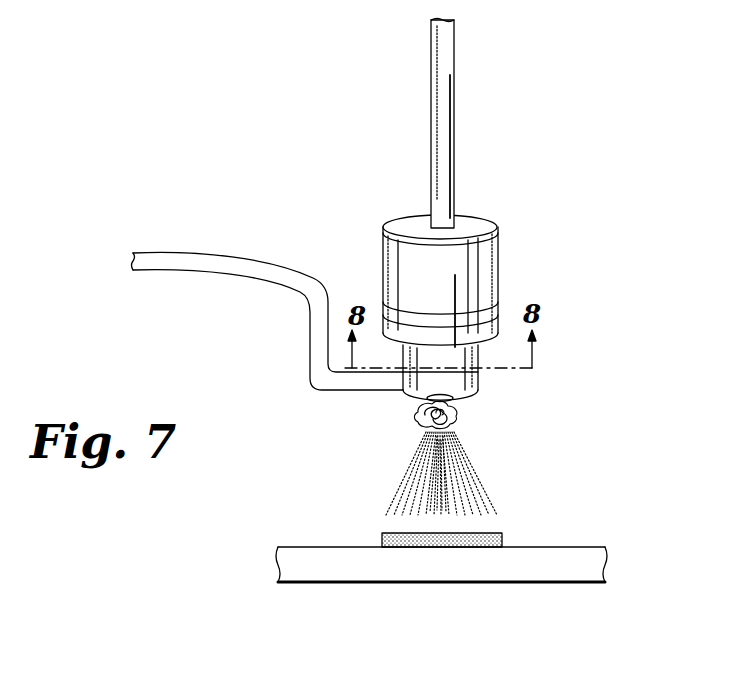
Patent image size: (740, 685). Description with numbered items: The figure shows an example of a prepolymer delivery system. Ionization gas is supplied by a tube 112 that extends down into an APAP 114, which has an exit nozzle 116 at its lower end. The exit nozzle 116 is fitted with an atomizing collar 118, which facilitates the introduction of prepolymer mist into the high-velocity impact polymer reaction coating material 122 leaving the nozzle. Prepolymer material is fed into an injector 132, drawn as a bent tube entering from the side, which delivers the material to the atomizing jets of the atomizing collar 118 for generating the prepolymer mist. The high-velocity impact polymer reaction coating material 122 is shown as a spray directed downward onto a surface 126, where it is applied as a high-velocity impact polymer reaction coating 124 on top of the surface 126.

The tube 112 is at (455, 141).
The APAP 114 is at (483, 273).
The exit nozzle 116 is at (483, 348).
The atomizing collar 118 is at (483, 380).
The high-velocity impact polymer reaction coating material 122 is at (503, 497).
The high-velocity impact polymer reaction coating 124 is at (442, 541).
The surface 126 is at (318, 568).
The injector 132 is at (217, 272).